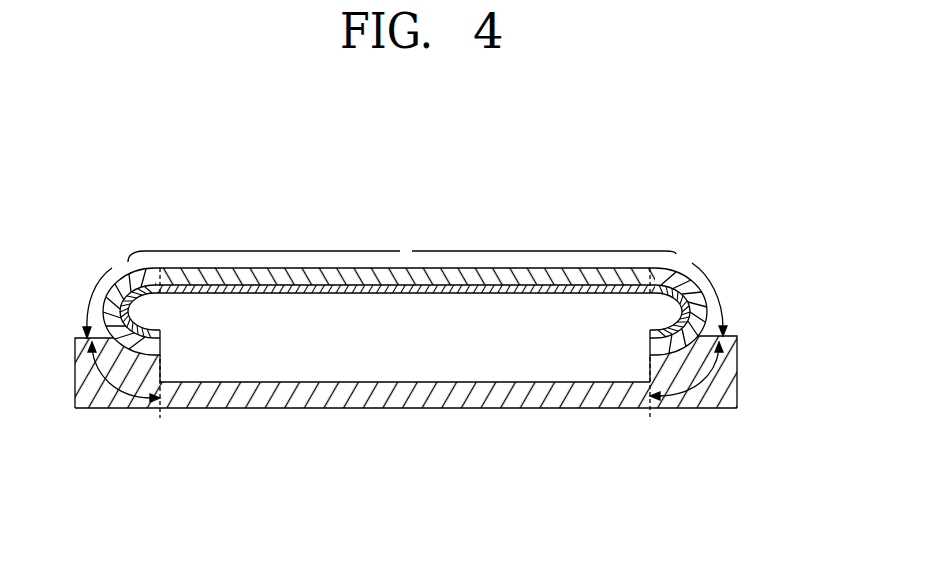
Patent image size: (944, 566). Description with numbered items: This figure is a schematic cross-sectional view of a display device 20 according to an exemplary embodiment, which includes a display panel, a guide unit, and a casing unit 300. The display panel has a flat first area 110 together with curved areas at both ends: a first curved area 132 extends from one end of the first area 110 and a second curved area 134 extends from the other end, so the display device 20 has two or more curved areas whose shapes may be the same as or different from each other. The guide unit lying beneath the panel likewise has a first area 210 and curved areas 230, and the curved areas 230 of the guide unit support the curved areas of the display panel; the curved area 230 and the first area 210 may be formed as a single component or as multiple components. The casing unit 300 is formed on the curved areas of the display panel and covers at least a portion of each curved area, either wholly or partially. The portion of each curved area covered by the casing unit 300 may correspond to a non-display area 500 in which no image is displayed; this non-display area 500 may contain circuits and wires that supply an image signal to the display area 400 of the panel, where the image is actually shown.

The display device 20 is at (709, 149).
The first area 110 is at (407, 268).
The first curved area 132 is at (118, 283).
The second curved area 134 is at (690, 282).
The first area 210 is at (406, 293).
The curved area 230 is at (131, 316).
The casing unit 300 is at (407, 408).
The display area 400 is at (478, 250).
The non-display area 500 is at (100, 387).